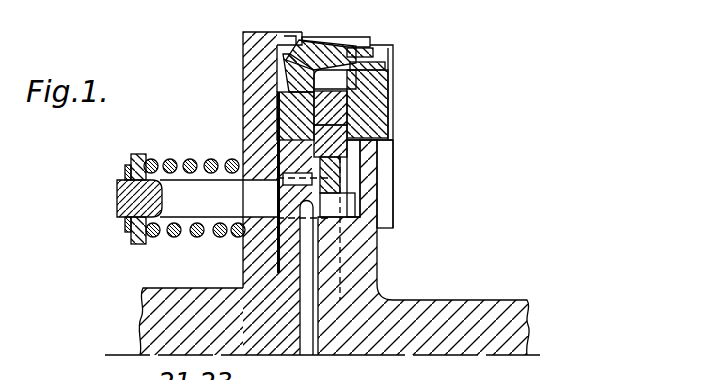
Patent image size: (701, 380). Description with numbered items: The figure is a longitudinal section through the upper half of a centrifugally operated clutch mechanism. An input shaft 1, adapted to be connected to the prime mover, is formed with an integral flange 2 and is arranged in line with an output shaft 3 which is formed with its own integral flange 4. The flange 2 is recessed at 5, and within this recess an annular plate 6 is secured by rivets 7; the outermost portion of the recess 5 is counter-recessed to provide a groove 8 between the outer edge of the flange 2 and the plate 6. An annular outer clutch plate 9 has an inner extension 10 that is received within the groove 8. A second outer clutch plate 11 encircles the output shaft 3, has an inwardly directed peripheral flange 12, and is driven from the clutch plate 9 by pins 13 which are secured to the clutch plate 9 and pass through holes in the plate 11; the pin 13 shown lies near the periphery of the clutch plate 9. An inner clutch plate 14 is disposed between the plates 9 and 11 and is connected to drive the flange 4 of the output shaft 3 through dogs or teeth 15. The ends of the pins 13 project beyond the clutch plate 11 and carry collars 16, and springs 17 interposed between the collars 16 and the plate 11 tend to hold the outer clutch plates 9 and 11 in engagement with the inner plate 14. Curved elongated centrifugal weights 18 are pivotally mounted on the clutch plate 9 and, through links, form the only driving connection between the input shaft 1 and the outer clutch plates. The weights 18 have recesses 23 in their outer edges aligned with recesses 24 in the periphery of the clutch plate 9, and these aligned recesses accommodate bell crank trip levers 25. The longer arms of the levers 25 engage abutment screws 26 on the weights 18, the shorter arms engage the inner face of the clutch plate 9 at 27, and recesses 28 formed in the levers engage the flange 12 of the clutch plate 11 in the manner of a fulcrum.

The input shaft 1 is at (452, 328).
The integral flange 2 is at (350, 278).
The output shaft 3 is at (158, 312).
The integral flange 4 is at (280, 243).
The recess 5 is at (343, 243).
The annular plate 6 is at (360, 237).
The rivets 7 is at (360, 202).
The groove 8 is at (360, 188).
The outer clutch plate 9 is at (367, 140).
The inner extension 10 is at (360, 170).
The second outer clutch plate 11 is at (263, 111).
The peripheral flange 12 is at (247, 44).
The pins 13 is at (140, 197).
The inner clutch plate 14 is at (292, 128).
The dogs or teeth 15 is at (276, 240).
The collars 16 is at (128, 165).
The springs 17 is at (167, 162).
The centrifugal weights 18 is at (368, 124).
The recesses 23 is at (365, 102).
The recesses 24 is at (362, 74).
The bell crank trip levers 25 is at (375, 48).
The abutment screws 26 is at (362, 68).
The engagement point 27 is at (247, 86).
The recesses 28 is at (284, 60).